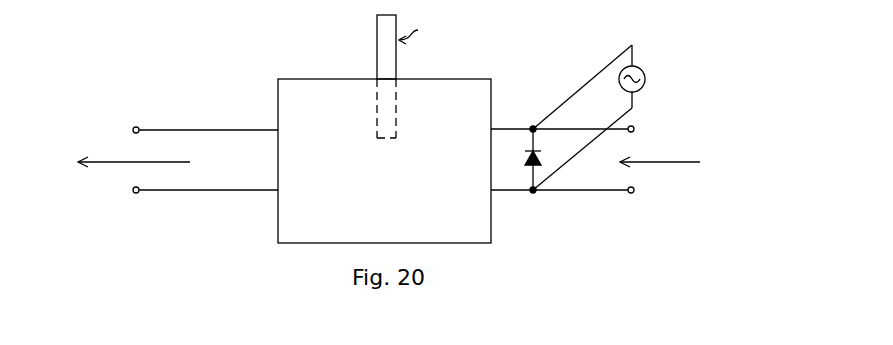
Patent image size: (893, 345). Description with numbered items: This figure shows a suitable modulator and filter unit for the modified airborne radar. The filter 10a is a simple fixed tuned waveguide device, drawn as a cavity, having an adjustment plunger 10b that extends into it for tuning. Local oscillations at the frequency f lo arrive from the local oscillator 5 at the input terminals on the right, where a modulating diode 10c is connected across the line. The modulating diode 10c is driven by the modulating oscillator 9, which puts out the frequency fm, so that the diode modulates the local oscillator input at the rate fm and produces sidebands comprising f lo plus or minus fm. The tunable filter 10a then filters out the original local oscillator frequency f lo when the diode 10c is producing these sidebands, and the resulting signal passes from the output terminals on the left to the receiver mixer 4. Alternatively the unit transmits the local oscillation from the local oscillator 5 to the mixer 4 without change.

The filter 10a is at (317, 92).
The adjustment plunger 10b is at (383, 60).
The modulating diode 10c is at (525, 160).
The modulating oscillator 9 is at (633, 64).
The mixer 4 is at (145, 160).
The local oscillator 5 is at (640, 163).